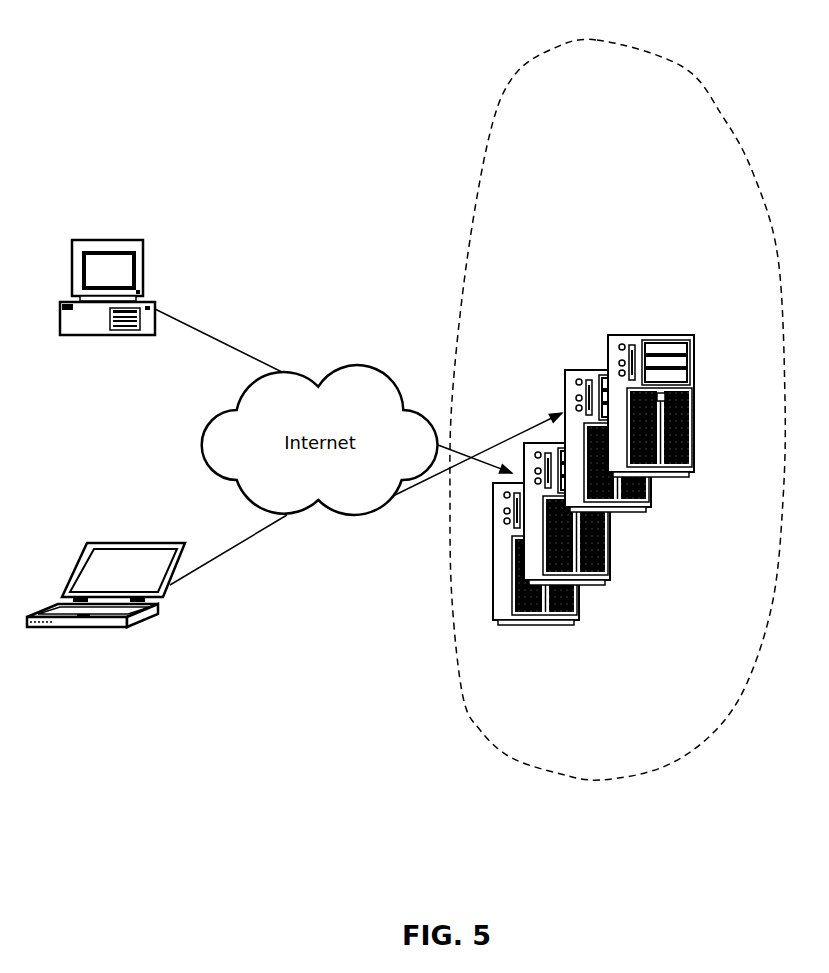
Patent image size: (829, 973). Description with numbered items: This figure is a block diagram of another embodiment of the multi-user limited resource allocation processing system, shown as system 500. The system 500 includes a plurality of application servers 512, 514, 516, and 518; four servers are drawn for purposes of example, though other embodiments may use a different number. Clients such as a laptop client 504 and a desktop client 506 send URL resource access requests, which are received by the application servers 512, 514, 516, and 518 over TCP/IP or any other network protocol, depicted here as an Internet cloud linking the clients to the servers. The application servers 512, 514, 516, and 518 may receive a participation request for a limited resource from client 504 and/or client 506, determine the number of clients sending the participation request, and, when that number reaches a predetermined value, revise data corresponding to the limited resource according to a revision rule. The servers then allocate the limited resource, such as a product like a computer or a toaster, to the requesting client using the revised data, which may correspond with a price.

The system 500 is at (481, 51).
The client 504 is at (127, 542).
The client 506 is at (143, 252).
The application server 512 is at (694, 442).
The application server 514 is at (651, 505).
The application server 516 is at (610, 550).
The application server 518 is at (579, 612).